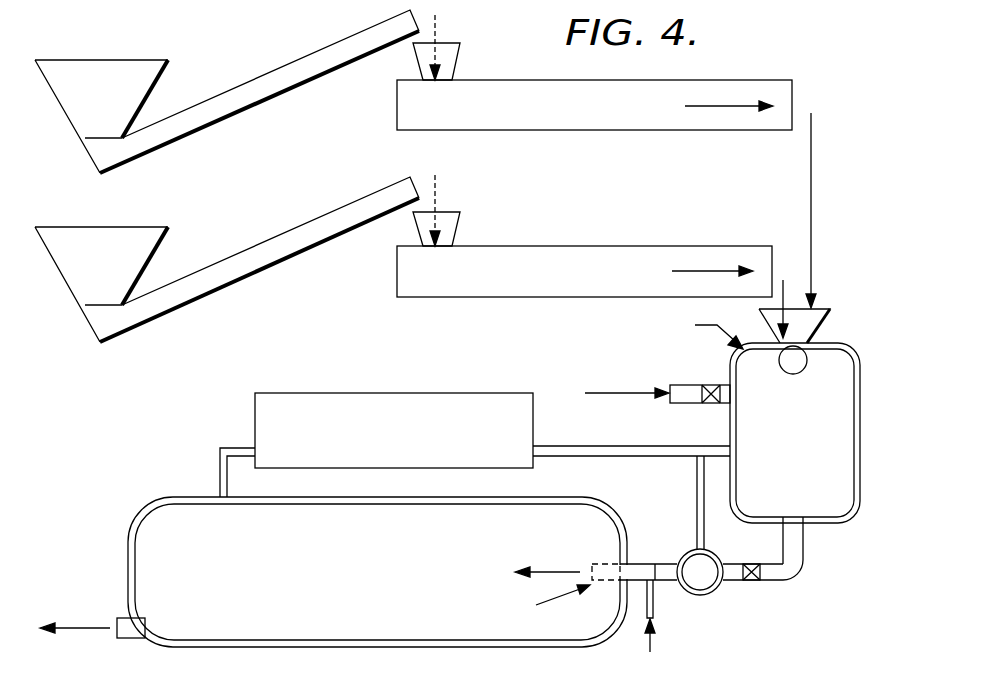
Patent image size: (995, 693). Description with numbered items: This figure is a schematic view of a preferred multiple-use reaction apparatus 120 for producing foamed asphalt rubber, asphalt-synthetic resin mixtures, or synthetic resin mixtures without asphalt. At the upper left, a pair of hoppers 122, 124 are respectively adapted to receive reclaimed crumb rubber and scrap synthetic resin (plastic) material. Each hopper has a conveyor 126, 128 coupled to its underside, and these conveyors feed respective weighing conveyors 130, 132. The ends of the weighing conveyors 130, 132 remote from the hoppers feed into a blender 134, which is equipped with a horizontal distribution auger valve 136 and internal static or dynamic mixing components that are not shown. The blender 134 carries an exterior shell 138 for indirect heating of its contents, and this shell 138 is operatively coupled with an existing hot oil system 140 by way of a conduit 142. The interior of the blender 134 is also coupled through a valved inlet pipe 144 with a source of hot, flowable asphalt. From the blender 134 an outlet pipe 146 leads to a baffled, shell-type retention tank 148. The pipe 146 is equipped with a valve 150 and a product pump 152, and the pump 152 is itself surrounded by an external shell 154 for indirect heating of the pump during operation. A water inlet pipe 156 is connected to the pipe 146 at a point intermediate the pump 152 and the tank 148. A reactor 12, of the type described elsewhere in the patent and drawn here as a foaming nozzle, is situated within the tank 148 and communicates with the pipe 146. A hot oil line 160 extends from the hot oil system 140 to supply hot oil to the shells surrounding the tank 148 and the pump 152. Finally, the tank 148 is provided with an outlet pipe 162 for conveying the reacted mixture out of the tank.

The reactor 12 is at (594, 548).
The apparatus 120 is at (772, 66).
The hopper 122 is at (143, 87).
The hopper 124 is at (67, 255).
The conveyor 126 is at (277, 87).
The conveyor 128 is at (277, 255).
The weighing conveyor 130 is at (594, 95).
The weighing conveyor 132 is at (592, 256).
The blender 134 is at (835, 360).
The horizontal distribution auger valve 136 is at (787, 364).
The exterior shell 138 is at (826, 528).
The existing hot oil system 140 is at (420, 393).
The conduit 142 is at (553, 447).
The valved inlet pipe 144 is at (687, 396).
The outlet pipe 146 is at (801, 568).
The baffled shell-type retention tank 148 is at (558, 490).
The valve 150 is at (748, 583).
The product pump 152 is at (706, 555).
The external shell 154 is at (680, 558).
The water inlet pipe 156 is at (697, 470).
The hot oil line 160 is at (220, 480).
The outlet pipe 162 is at (130, 641).